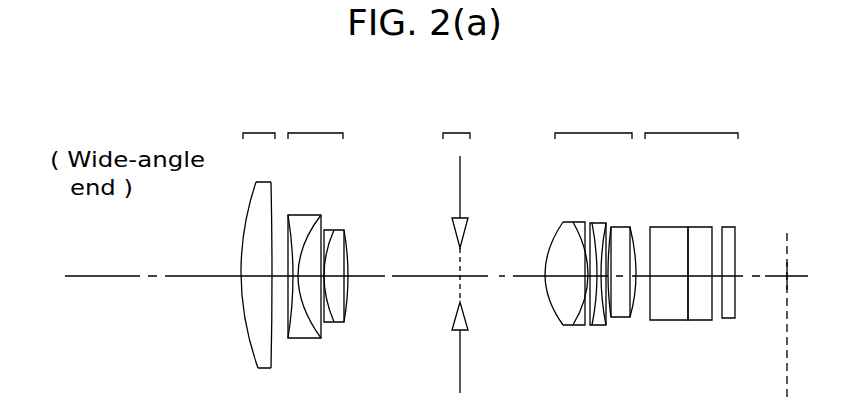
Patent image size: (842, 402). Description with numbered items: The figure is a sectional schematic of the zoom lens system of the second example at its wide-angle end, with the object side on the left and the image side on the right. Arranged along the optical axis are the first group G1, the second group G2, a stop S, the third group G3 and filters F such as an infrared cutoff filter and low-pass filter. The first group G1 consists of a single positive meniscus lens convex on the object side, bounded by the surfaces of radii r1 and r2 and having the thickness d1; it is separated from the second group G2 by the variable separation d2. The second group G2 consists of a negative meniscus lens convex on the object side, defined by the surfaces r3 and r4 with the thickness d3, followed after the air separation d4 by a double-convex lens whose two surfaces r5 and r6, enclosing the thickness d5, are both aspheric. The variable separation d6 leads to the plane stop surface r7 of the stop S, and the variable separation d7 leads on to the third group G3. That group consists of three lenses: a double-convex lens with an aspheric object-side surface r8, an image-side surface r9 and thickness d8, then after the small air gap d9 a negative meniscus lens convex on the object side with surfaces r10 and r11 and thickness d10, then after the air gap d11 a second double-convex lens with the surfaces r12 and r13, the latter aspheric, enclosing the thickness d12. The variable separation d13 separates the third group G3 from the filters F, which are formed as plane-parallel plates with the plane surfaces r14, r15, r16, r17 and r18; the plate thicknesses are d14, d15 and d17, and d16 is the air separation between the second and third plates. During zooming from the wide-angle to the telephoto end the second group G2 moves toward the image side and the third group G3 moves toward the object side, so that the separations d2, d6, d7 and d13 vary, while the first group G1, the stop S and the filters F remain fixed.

The first group G1 is at (258, 120).
The second group G2 is at (315, 120).
The stop S is at (456, 246).
The third group G3 is at (593, 120).
The filters F is at (691, 120).
The radius of curvature of the first lens surface r1 is at (252, 193).
The radius of curvature of the second lens surface r2 is at (270, 183).
The radius of curvature of the third lens surface r3 is at (283, 225).
The radius of curvature of the fourth lens surface r4 is at (303, 245).
The radius of curvature of the fifth lens surface r5 is at (330, 230).
The radius of curvature of the sixth lens surface r6 is at (353, 237).
The radius of curvature of the seventh surface r7 is at (458, 264).
The radius of curvature of the eighth lens surface r8 is at (548, 247).
The radius of curvature of the ninth lens surface r9 is at (575, 223).
The radius of curvature of the tenth lens surface r10 is at (593, 224).
The radius of curvature of the eleventh lens surface r11 is at (604, 228).
The radius of curvature of the twelfth lens surface r12 is at (612, 228).
The radius of curvature of the thirteenth lens surface r13 is at (636, 237).
The radius of curvature of the fourteenth surface r14 is at (649, 246).
The radius of curvature of the fifteenth surface r15 is at (687, 250).
The radius of curvature of the sixteenth surface r16 is at (713, 248).
The radius of curvature of the seventeenth surface r17 is at (721, 248).
The radius of curvature of the eighteenth surface r18 is at (737, 240).
The separation between the first and second lens surfaces d1 is at (253, 280).
The separation between the second and third lens surfaces d2 is at (278, 278).
The separation between the third and fourth lens surfaces d3 is at (300, 300).
The separation between the fourth and fifth lens surfaces d4 is at (322, 330).
The separation between the fifth and sixth lens surfaces d5 is at (337, 300).
The separation between the sixth and seventh surfaces d6 is at (401, 280).
The separation between the seventh and eighth surfaces d7 is at (499, 280).
The separation between the eighth and ninth lens surfaces d8 is at (565, 277).
The separation between the ninth and tenth lens surfaces d9 is at (590, 322).
The separation between the tenth and eleventh lens surfaces d10 is at (595, 325).
The separation between the eleventh and twelfth lens surfaces d11 is at (603, 323).
The separation between the twelfth and thirteenth lens surfaces d12 is at (620, 320).
The separation between the thirteenth and fourteenth surfaces d13 is at (637, 280).
The separation between the fourteenth and fifteenth surfaces d14 is at (672, 277).
The separation between the fifteenth and sixteenth surfaces d15 is at (700, 295).
The separation between the sixteenth and seventeenth surfaces d16 is at (716, 300).
The separation between the seventeenth and eighteenth surfaces d17 is at (728, 300).